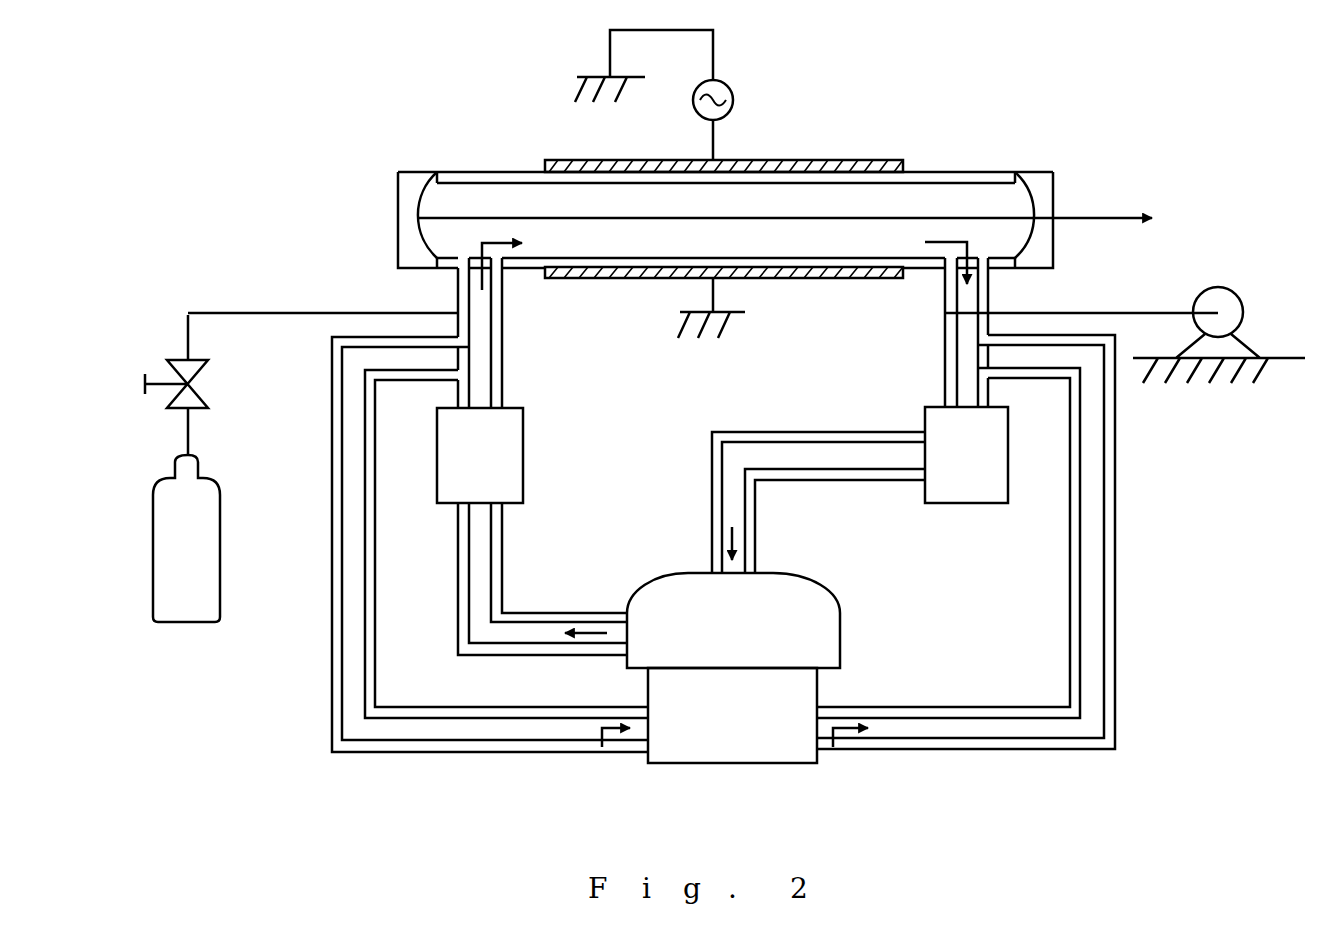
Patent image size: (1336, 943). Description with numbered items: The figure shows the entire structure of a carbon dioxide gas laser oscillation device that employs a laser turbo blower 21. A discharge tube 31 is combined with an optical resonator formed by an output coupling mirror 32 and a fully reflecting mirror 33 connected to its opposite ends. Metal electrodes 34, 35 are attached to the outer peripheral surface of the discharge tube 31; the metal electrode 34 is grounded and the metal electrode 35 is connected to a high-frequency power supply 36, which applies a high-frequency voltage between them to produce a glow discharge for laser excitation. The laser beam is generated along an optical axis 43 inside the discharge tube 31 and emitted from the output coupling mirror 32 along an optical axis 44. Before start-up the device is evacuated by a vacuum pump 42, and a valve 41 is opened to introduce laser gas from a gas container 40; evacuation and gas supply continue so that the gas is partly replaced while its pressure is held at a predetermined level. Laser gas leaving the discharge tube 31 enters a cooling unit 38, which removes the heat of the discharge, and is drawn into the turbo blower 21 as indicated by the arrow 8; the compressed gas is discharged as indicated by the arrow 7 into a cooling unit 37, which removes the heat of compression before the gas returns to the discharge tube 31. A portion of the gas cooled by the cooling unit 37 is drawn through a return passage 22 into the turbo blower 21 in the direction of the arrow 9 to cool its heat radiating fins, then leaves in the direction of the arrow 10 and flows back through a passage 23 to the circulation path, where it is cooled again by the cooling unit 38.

The arrow 7 is at (590, 625).
The arrow 8 is at (735, 543).
The arrow 9 is at (602, 748).
The arrow 10 is at (833, 749).
The turbo blower 21 is at (725, 763).
The return passage 22 is at (453, 752).
The passage 23 is at (962, 749).
The discharge tube 31 is at (952, 172).
The output coupling mirror 32 is at (1055, 172).
The fully reflecting mirror 33 is at (398, 177).
The metal electrode 34 is at (878, 279).
The metal electrode 35 is at (893, 160).
The high-frequency power supply 36 is at (733, 108).
The cooling unit 37 is at (523, 453).
The cooling unit 38 is at (963, 503).
The gas container 40 is at (153, 578).
The valve 41 is at (145, 385).
The vacuum pump 42 is at (1222, 287).
The optical axis 43 is at (512, 215).
The optical axis 44 is at (1120, 215).